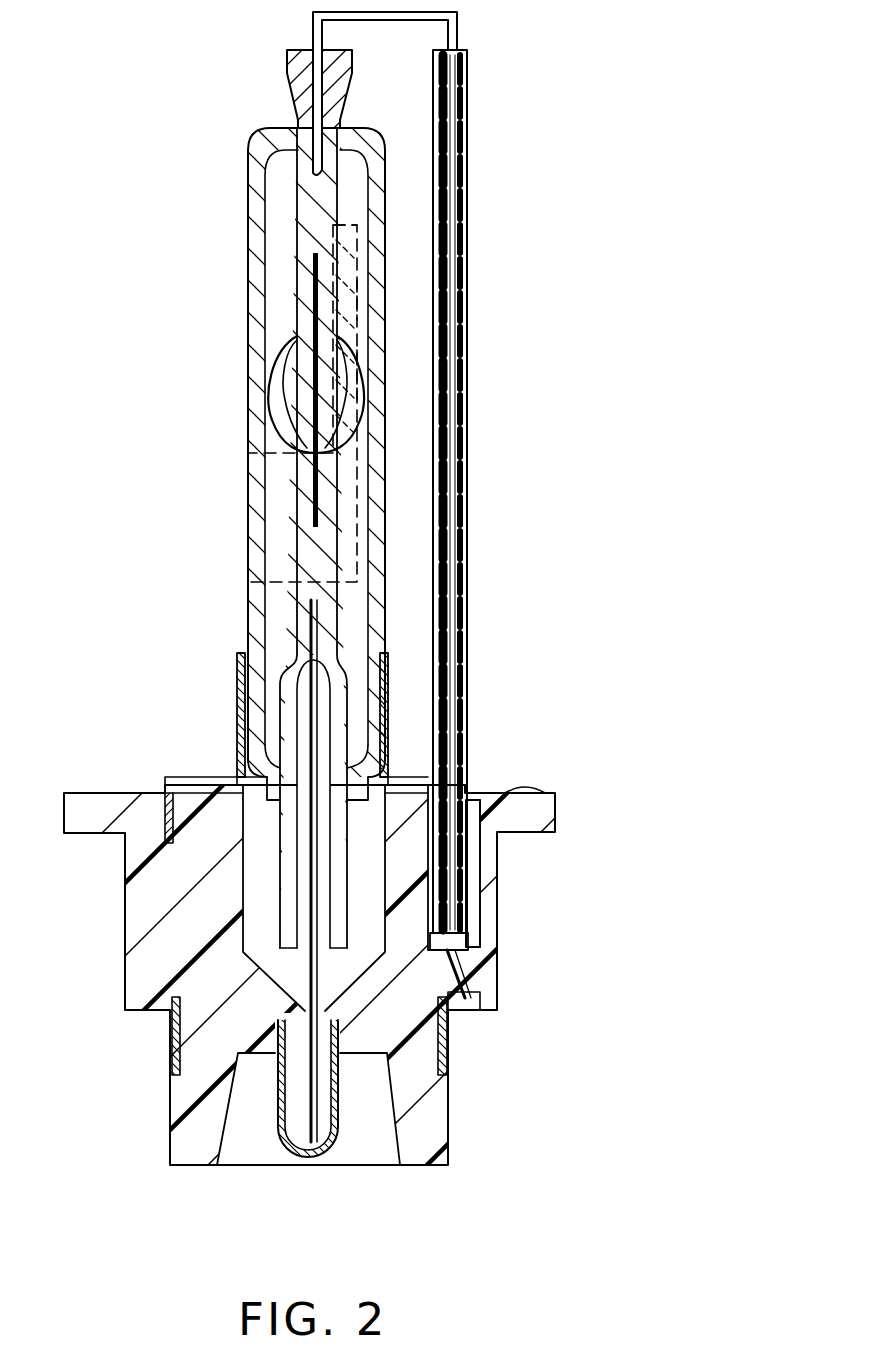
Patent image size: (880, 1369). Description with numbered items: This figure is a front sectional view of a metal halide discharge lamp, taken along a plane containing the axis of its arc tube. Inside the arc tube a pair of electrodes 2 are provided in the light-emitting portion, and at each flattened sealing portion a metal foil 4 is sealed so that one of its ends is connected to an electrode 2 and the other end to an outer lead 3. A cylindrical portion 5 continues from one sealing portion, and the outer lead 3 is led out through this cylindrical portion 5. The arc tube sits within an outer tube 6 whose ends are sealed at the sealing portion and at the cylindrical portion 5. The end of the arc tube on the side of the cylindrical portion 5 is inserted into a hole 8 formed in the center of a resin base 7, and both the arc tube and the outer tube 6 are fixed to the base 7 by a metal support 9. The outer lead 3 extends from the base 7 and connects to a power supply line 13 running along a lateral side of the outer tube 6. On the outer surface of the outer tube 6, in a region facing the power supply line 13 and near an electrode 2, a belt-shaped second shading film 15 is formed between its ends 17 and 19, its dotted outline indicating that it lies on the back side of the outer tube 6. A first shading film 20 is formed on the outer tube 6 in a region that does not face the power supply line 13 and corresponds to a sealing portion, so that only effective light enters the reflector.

The electrode 2 is at (367, 340).
The outer lead 3 is at (310, 84).
The metal foil 4 is at (318, 235).
The cylindrical portion 5 is at (282, 850).
The outer tube 6 is at (250, 228).
The base 7 is at (158, 900).
The hole 8 is at (470, 793).
The support 9 is at (240, 685).
The power supply line 13 is at (447, 460).
The second shading film 15 is at (378, 222).
The end of shading film 17 is at (388, 366).
The end of shading film 19 is at (375, 298).
The first shading film 20 is at (250, 493).